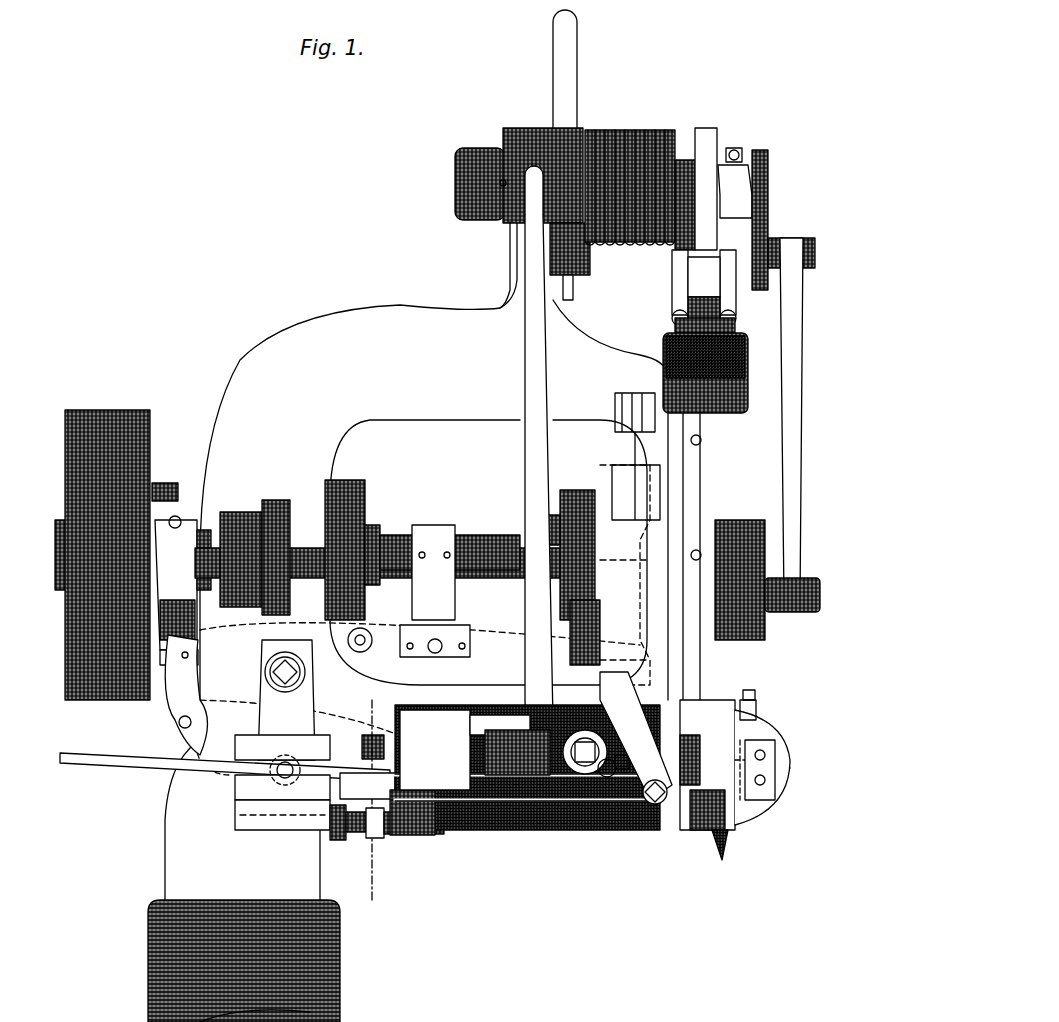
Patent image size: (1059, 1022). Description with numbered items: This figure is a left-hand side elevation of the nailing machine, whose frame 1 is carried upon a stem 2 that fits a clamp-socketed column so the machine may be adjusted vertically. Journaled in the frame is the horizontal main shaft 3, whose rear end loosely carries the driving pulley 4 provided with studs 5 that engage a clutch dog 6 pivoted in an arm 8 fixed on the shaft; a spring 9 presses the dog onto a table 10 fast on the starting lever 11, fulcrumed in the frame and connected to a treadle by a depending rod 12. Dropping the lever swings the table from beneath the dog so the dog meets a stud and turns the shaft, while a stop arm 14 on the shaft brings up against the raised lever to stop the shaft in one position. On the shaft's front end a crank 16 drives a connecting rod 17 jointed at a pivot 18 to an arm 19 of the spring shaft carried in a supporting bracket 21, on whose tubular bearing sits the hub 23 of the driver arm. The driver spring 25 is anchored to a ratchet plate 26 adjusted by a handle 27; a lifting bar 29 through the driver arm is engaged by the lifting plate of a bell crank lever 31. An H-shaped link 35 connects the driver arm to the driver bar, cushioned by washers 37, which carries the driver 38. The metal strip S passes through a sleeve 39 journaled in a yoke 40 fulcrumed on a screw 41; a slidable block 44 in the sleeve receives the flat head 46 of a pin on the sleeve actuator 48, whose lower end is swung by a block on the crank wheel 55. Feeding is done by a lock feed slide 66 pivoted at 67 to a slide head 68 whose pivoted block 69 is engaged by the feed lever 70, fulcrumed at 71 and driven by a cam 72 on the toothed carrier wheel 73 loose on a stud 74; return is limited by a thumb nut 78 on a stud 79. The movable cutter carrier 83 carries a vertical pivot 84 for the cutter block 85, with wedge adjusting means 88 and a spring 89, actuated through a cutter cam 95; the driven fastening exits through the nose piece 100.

The frame 1 is at (375, 368).
The stem 2 is at (330, 968).
The main or drive shaft 3 is at (400, 537).
The driving pulley 4 is at (93, 410).
The studs 5 is at (165, 483).
The clutch dog 6 is at (195, 628).
The arm 8 is at (195, 590).
The spring 9 is at (176, 583).
The table 10 is at (179, 695).
The starting lever 11 is at (426, 641).
The depending rod 12 is at (180, 722).
The stop arm 14 is at (425, 603).
The crank 16 is at (762, 600).
The connecting rod 17 is at (798, 425).
The pivot 18 is at (798, 280).
The arm 19 is at (769, 205).
The supporting bracket 21 is at (510, 262).
The hub 23 is at (705, 140).
The driver spring 25 is at (660, 132).
The ratchet plate 26 is at (567, 140).
The handle 27 is at (577, 50).
The lifting bar 29 is at (740, 200).
The bell crank lever 31 is at (745, 180).
The H-shaped link 35 is at (672, 270).
The cushioning washers 37 is at (748, 350).
The driver 38 is at (710, 700).
The sleeve 39 is at (490, 718).
The yoke 40 is at (545, 820).
The screw 41 is at (620, 815).
The radially slidable block 44 is at (600, 778).
The flat head 46 is at (572, 745).
The sleeve actuator 48 is at (525, 452).
The crank wheel 55 is at (577, 495).
The lock feed slide 66 is at (238, 785).
The pivot 67 is at (245, 808).
The slide head 68 is at (240, 742).
The pivoted block 69 is at (290, 790).
The feed lever 70 is at (300, 707).
The fulcrum 71 is at (265, 672).
The cam 72 is at (276, 508).
The toothed carrier wheel 73 is at (350, 490).
The stud 74 is at (372, 530).
The thumb nut 78 is at (342, 845).
The stud 79 is at (395, 840).
The movable cutter carrier 83 is at (720, 800).
The vertical pivot 84 is at (757, 710).
The cutter block 85 is at (772, 795).
The wedge adjusting means 88 is at (758, 694).
The spring 89 is at (775, 755).
The cutter cam 95 is at (650, 540).
The nose piece 100 is at (724, 855).
The metal strip S is at (116, 783).